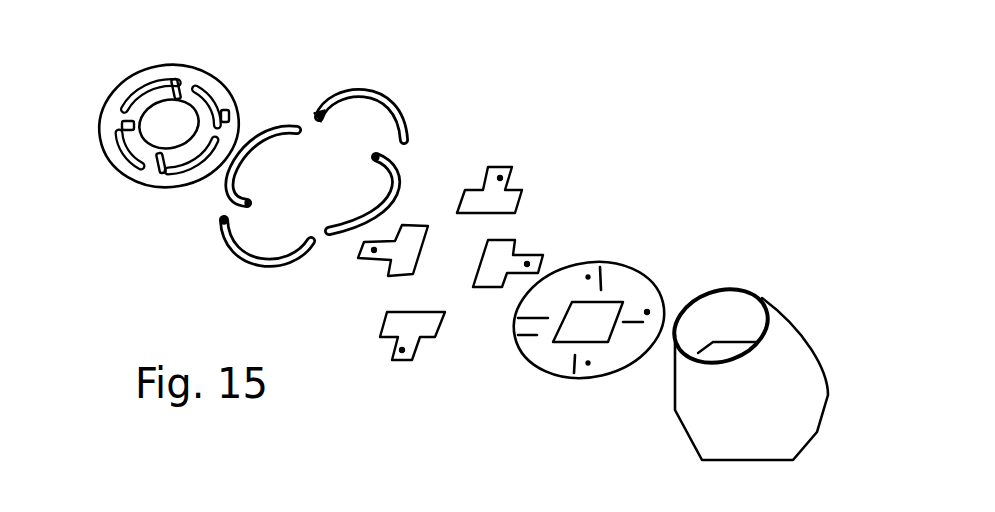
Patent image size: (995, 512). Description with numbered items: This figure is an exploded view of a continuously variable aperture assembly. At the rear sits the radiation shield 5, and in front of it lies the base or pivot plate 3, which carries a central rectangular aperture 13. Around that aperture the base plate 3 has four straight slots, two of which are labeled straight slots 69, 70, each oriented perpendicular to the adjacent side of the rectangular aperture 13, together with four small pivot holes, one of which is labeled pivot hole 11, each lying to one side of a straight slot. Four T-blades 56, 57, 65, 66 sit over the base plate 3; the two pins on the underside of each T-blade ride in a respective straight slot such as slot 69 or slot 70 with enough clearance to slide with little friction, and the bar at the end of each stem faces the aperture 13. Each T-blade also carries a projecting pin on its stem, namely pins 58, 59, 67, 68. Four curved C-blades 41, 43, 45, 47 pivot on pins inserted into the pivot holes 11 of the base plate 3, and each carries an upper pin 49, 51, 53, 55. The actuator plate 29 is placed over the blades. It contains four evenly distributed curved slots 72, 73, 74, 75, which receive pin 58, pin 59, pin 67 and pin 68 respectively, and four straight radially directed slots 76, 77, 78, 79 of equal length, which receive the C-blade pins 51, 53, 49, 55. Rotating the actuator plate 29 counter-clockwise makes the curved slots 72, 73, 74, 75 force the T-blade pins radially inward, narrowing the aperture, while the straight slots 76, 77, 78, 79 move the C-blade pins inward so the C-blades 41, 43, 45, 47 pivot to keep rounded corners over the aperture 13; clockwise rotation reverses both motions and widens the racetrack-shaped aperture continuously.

The base or pivot plate 3 is at (535, 375).
The radiation shield 5 is at (792, 323).
The pivot hole 11 is at (518, 330).
The rectangular aperture 13 is at (588, 322).
The actuator plate 29 is at (123, 93).
The C-blade 41 is at (221, 242).
The C-blade 43 is at (423, 100).
The C-blade 45 is at (286, 127).
The C-blade 47 is at (372, 208).
The C-blade pin 49 is at (307, 241).
The C-blade pin 51 is at (321, 114).
The C-blade pin 53 is at (250, 199).
The C-blade pin 55 is at (373, 155).
The T-blade 56 is at (522, 202).
The T-blade 57 is at (523, 237).
The T-blade pin 58 is at (508, 168).
The T-blade pin 59 is at (530, 266).
The T-blade 65 is at (387, 322).
The T-blade 66 is at (377, 264).
The T-blade pin 67 is at (397, 350).
The T-blade pin 68 is at (392, 227).
The straight slot 69 is at (610, 278).
The straight slot 70 is at (663, 307).
The curved slot 72 is at (178, 71).
The curved slot 73 is at (207, 93).
The curved slot 74 is at (187, 177).
The curved slot 75 is at (100, 163).
The straight radial slot 76 is at (190, 68).
The straight radial slot 77 is at (227, 110).
The straight radial slot 78 is at (140, 186).
The straight radial slot 79 is at (124, 118).